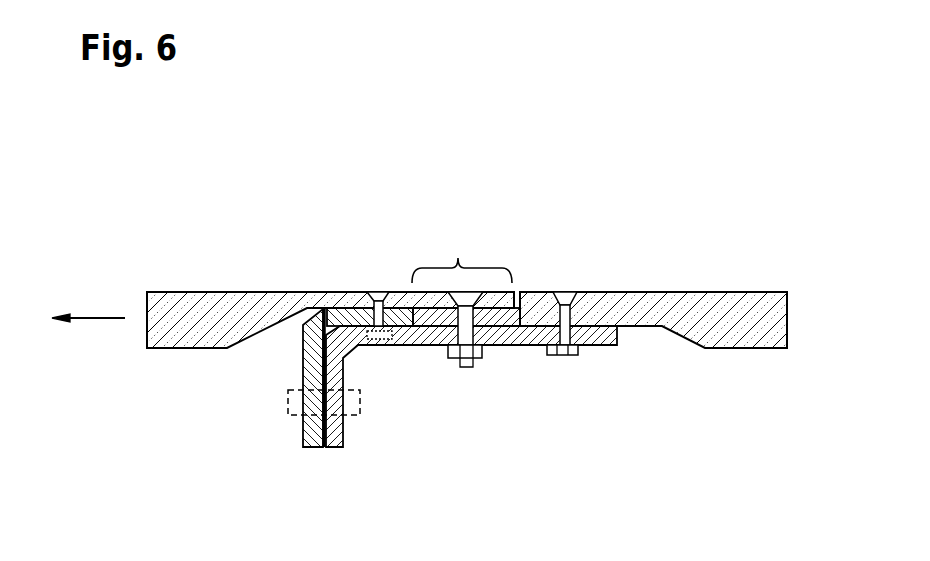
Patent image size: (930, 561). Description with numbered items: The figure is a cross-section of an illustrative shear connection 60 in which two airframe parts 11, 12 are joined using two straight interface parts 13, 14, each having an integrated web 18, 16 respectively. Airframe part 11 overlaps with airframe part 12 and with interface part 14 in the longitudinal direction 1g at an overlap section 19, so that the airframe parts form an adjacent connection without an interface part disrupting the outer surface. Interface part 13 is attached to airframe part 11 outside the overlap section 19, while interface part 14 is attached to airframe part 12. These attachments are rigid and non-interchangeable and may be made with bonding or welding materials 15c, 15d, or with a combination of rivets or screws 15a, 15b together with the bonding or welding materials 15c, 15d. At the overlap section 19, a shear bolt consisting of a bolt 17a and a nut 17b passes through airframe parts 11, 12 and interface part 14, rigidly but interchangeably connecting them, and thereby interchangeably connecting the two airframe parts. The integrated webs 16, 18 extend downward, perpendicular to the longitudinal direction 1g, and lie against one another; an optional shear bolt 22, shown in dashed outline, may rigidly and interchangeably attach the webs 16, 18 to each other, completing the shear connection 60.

The airframe part 11 is at (212, 297).
The airframe part 12 is at (715, 302).
The straight interface part 13 is at (303, 343).
The straight interface part 14 is at (518, 336).
The rivet or screw 15a is at (377, 293).
The rivet or screw 15b is at (563, 292).
The bonding or welding material 15c is at (350, 307).
The bonding or welding material 15d is at (588, 338).
The integrated web 16 is at (333, 435).
The bolt 17a is at (455, 337).
The nut 17b is at (482, 352).
The integrated web 18 is at (314, 433).
The overlap section 19 is at (462, 252).
The optional shear bolt 22 is at (288, 413).
The shear connection 60 is at (548, 216).
The longitudinal direction 1g is at (95, 322).